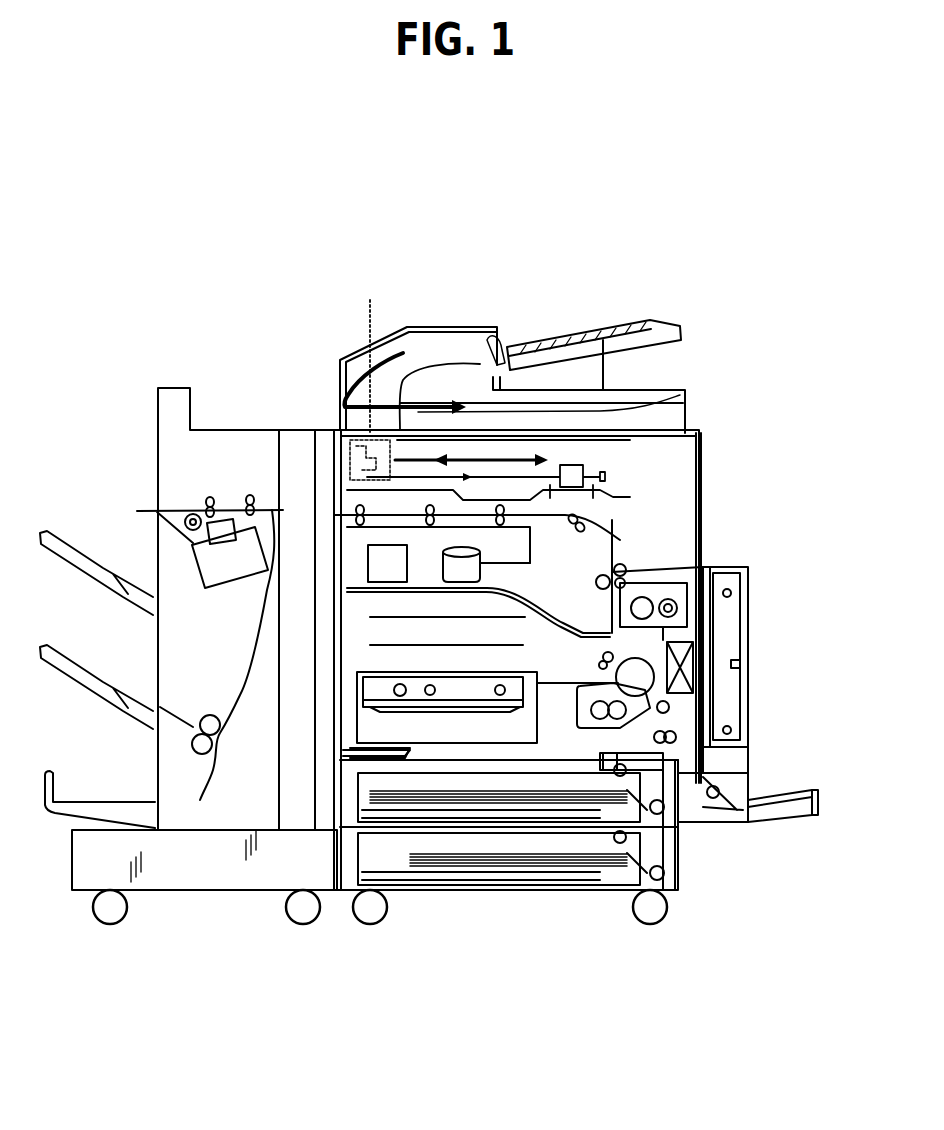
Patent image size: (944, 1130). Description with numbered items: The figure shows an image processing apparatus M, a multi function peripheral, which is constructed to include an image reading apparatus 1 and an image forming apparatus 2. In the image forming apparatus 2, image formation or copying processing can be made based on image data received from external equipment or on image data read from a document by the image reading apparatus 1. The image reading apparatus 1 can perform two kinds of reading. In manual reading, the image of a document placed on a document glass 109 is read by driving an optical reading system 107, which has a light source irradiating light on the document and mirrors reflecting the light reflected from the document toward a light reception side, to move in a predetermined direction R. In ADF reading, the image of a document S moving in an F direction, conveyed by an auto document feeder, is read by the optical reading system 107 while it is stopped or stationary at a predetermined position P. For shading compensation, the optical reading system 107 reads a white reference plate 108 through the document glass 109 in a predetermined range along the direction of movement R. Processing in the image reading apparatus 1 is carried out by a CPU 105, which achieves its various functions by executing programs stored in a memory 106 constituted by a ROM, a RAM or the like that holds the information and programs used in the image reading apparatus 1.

The image reading apparatus 1 is at (816, 320).
The image forming apparatus 2 is at (816, 578).
The CPU 105 is at (368, 560).
The memory 106 is at (530, 563).
The optical reading system 107 is at (350, 448).
The white reference plate 108 is at (660, 437).
The document glass 109 is at (401, 380).
The image processing apparatus M is at (337, 282).
The F direction F is at (340, 360).
The predetermined position P is at (370, 354).
The document S is at (585, 332).
The predetermined direction R is at (488, 457).